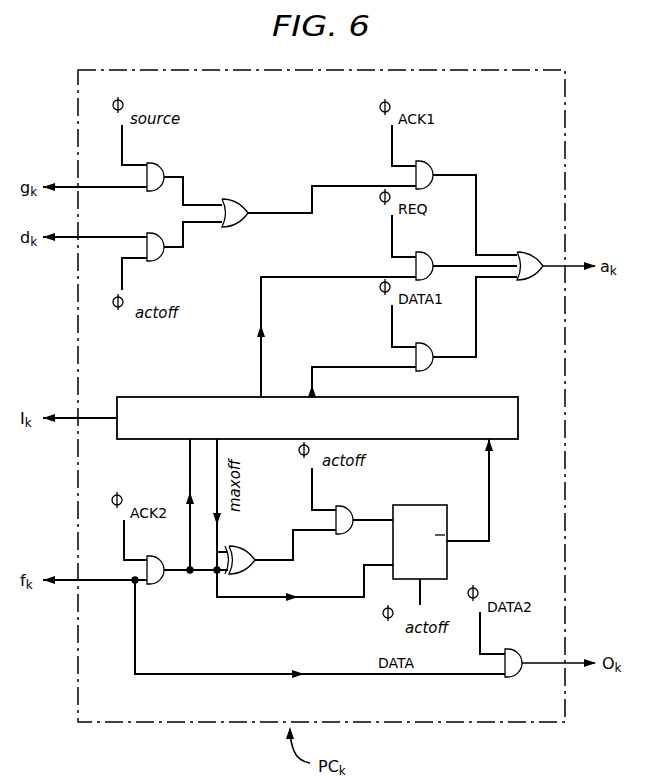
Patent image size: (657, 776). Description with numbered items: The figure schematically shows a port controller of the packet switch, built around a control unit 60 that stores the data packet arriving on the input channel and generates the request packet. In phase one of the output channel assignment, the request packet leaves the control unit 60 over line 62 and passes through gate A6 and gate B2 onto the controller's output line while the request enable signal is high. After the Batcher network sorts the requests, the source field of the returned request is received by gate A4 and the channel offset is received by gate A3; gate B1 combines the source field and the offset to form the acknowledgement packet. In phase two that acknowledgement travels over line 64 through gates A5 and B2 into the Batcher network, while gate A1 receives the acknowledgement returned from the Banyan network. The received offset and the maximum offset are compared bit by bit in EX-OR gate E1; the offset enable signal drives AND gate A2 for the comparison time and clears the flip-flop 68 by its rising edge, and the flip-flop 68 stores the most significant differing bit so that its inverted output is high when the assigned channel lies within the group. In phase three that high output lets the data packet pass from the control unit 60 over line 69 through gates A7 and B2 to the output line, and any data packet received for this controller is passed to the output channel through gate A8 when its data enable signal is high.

The control unit 60 is at (465, 397).
The line 62 is at (276, 277).
The line 64 is at (312, 186).
The flip-flop 68 is at (432, 505).
The line 69 is at (315, 366).
The gate A1 is at (164, 562).
The AND gate A2 is at (353, 512).
The gate A3 is at (164, 240).
The gate A4 is at (164, 169).
The gate A5 is at (433, 167).
The gate A6 is at (433, 258).
The gate A7 is at (433, 349).
The gate A8 is at (522, 655).
The gate B1 is at (239, 204).
The gate B2 is at (534, 258).
The EX-OR gate E1 is at (245, 552).